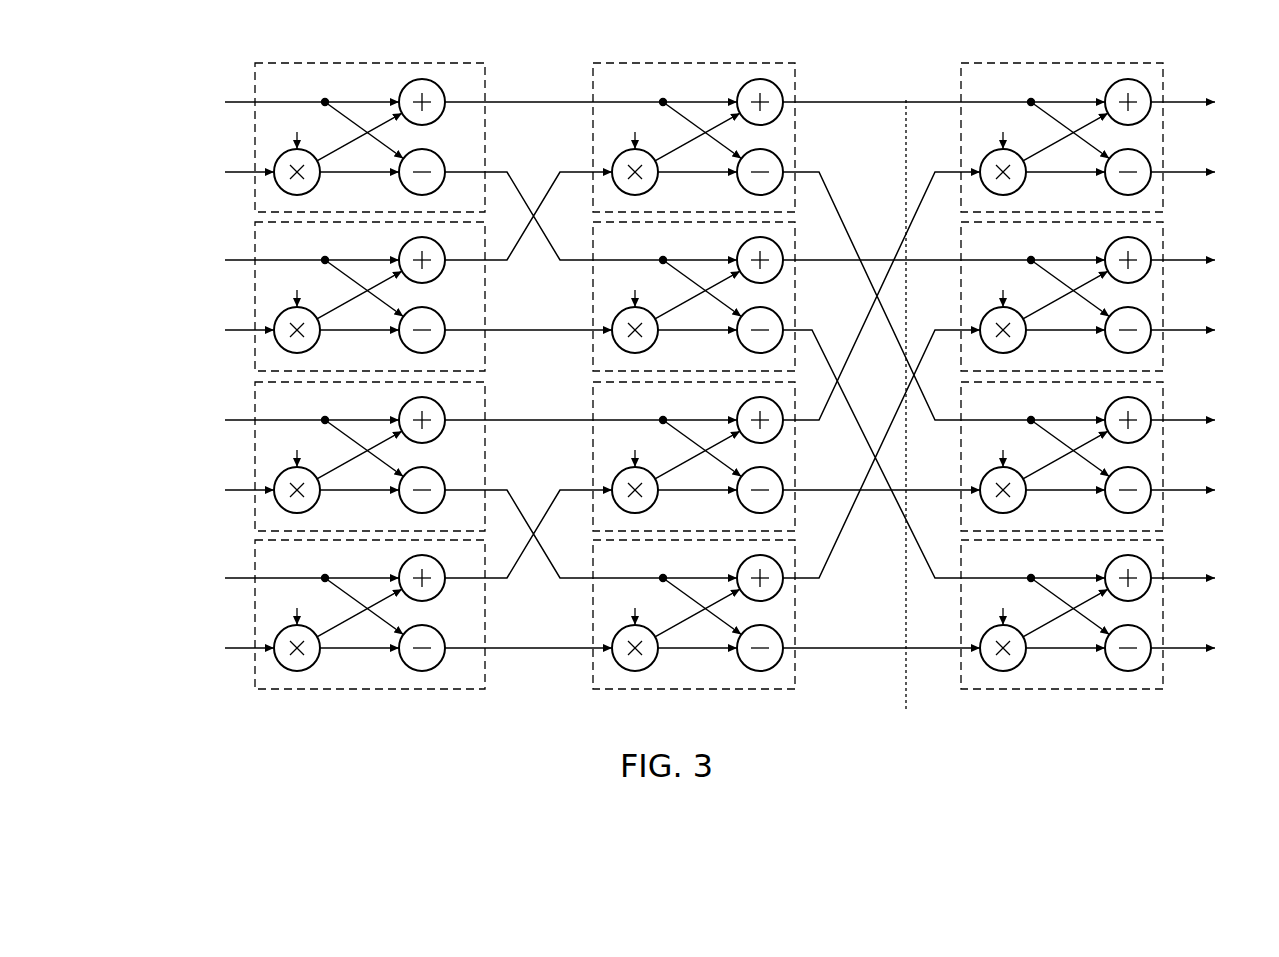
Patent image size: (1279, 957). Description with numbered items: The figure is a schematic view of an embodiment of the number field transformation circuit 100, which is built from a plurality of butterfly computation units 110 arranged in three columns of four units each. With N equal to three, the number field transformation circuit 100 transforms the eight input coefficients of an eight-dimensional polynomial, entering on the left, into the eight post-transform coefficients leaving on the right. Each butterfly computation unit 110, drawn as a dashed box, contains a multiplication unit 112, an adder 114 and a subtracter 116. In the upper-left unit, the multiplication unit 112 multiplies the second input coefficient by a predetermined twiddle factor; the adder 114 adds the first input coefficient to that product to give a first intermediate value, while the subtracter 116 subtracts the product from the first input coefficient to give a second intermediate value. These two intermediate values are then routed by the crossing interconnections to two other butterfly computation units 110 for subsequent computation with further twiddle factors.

The number field transformation circuit 100 is at (122, 125).
The butterfly computation unit 110 is at (741, 365).
The multiplication unit 112 is at (327, 179).
The adder 114 is at (393, 94).
The subtracter 116 is at (440, 158).